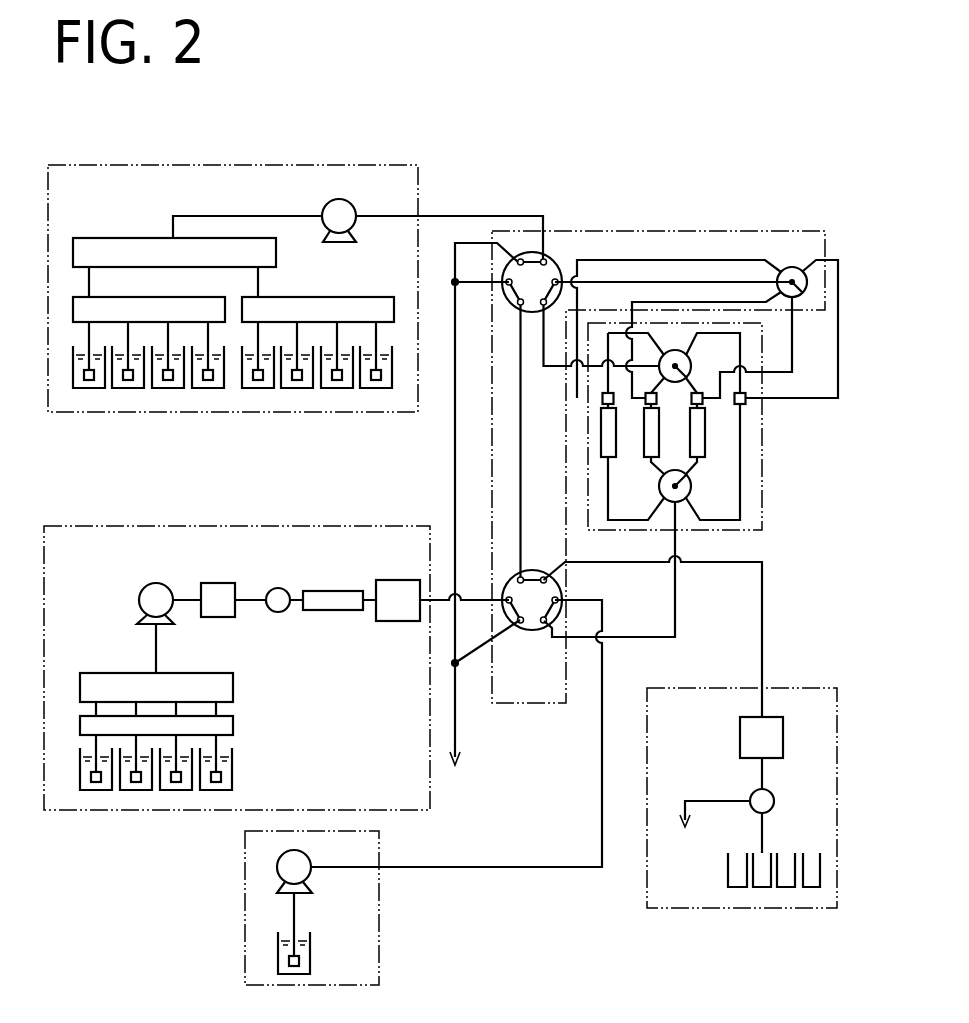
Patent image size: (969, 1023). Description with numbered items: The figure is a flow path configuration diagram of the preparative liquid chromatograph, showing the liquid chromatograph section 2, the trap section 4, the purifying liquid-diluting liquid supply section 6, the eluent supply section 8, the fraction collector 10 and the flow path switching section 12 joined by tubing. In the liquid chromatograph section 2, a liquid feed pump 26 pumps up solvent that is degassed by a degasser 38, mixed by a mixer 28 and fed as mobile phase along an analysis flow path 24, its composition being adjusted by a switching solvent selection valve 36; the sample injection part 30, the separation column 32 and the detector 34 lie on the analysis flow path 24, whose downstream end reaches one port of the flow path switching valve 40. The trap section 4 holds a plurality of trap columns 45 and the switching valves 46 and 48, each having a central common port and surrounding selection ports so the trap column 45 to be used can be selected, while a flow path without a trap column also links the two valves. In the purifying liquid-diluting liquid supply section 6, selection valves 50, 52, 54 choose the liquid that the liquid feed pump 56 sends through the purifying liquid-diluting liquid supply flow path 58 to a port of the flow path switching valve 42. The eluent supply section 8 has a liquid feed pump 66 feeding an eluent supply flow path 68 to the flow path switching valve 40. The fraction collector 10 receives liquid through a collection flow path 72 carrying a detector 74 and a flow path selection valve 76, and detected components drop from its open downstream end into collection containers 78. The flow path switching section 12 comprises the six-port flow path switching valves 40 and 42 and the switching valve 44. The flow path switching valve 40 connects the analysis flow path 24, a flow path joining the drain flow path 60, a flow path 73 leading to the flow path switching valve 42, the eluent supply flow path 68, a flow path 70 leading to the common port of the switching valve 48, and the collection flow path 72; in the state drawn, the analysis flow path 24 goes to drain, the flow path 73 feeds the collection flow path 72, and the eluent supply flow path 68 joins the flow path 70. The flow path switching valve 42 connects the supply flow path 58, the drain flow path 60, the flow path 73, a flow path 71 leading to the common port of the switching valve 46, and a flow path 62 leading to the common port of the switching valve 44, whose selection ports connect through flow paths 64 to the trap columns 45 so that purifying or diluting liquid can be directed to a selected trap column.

The liquid chromatograph section 2 is at (160, 524).
The trap section 4 is at (763, 430).
The purifying liquid-diluting liquid supply section 6 is at (383, 162).
The eluent supply section 8 is at (380, 948).
The fraction collector 10 is at (765, 910).
The flow path switching section 12 is at (576, 229).
The analysis flow path 24 is at (254, 600).
The liquid feed pump 26 is at (140, 590).
The mixer 28 is at (222, 617).
The sample injection part 30 is at (283, 612).
The separation column 32 is at (337, 610).
The detector 34 is at (397, 621).
The switching solvent selection valve 36 is at (234, 684).
The degasser 38 is at (234, 725).
The flow path switching valve 40 is at (532, 630).
The flow path switching valve 42 is at (532, 251).
The switching valve 44 is at (793, 268).
The trap column 45 is at (706, 435).
The switching valve 46 is at (692, 365).
The switching valve 48 is at (691, 487).
The selection valve 50 is at (73, 303).
The selection valve 52 is at (369, 297).
The selection valve 54 is at (113, 237).
The liquid feed pump 56 is at (323, 211).
The purifying liquid-diluting liquid supply flow path 58 is at (433, 213).
The drain flow path 60 is at (455, 497).
The flow path 62 is at (636, 280).
The flow path 64 is at (722, 258).
The liquid feed pump 66 is at (310, 877).
The eluent supply flow path 68 is at (482, 867).
The flow path 70 is at (677, 606).
The flow path 71 is at (555, 367).
The collection flow path 72 is at (763, 605).
The flow path 73 is at (521, 483).
The detector 74 is at (739, 738).
The flow path selection valve 76 is at (750, 795).
The collection containers 78 is at (737, 870).